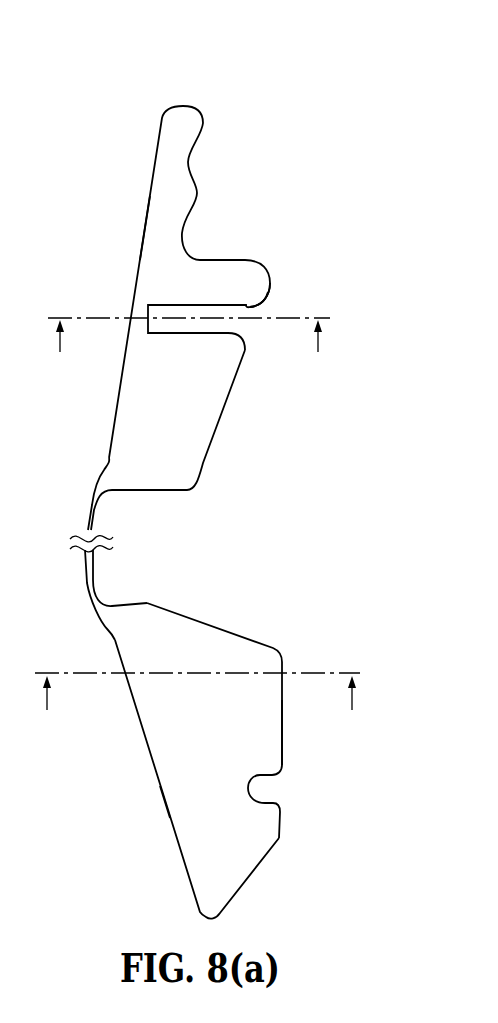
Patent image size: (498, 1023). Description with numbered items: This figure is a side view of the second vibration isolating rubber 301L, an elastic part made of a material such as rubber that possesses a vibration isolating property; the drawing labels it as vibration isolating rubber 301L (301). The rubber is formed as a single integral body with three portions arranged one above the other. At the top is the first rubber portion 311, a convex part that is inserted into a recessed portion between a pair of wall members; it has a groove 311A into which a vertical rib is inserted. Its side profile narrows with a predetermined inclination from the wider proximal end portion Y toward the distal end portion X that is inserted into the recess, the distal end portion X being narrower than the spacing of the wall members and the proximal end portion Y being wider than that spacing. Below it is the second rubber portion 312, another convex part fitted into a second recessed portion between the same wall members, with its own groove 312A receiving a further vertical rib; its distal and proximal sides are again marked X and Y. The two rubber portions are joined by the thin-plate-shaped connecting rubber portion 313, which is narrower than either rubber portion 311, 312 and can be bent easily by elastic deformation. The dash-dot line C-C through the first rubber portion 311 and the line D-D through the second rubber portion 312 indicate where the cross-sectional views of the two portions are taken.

The second vibration isolating rubber 301L is at (210, 94).
The fixing member 301 is at (168, 440).
The first rubber portion 311 is at (230, 275).
The groove 311A is at (268, 306).
The second rubber portion 312 is at (228, 652).
The groove 312A is at (280, 778).
The connecting rubber portion 313 is at (92, 518).
The distal end portion X is at (268, 270).
The proximal end portion Y is at (144, 232).
The line C- C is at (189, 350).
The line D- D is at (197, 706).